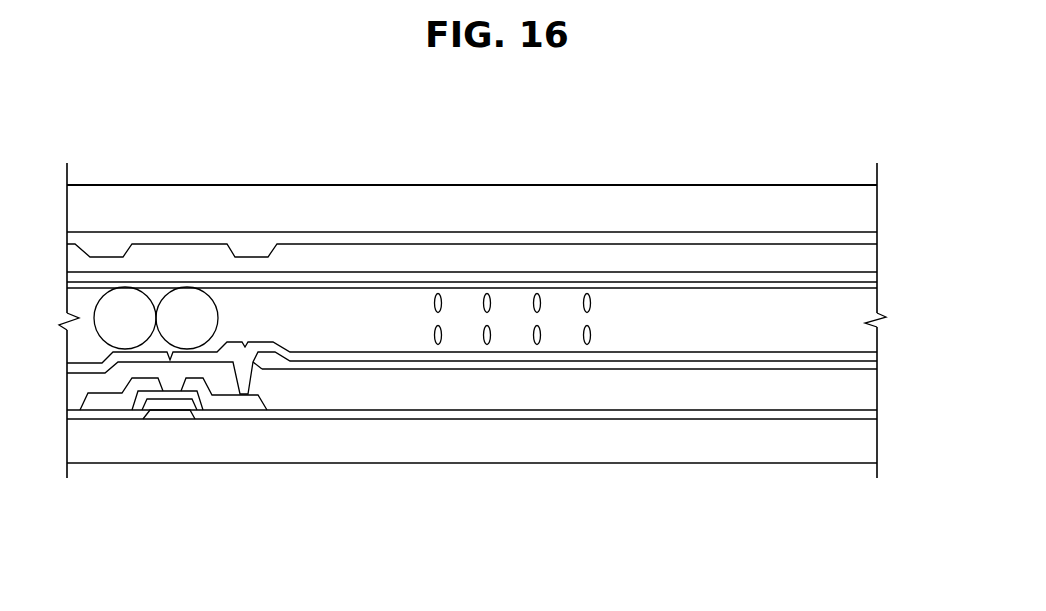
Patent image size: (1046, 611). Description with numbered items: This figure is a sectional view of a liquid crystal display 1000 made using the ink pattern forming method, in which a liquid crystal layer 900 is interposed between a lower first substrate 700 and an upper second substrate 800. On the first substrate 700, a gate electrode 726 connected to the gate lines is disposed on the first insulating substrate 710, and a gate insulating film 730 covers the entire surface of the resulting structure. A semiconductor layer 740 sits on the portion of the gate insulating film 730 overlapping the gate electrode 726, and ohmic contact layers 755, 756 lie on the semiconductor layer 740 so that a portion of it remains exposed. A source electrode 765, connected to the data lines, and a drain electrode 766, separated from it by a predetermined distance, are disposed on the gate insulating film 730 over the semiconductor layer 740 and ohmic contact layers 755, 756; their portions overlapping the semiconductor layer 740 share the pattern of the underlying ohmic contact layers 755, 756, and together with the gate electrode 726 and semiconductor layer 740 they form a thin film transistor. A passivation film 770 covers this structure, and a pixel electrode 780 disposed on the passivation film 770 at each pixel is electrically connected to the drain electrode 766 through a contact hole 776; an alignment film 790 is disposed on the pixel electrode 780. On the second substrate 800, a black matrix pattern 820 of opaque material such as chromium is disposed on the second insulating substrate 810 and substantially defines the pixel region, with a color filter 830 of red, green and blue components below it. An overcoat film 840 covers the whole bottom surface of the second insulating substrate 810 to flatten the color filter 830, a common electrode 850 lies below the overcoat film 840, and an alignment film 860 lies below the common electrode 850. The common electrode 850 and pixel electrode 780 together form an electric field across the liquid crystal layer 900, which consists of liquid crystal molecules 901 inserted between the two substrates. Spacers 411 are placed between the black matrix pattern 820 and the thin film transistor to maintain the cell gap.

The liquid crystal display 1000 is at (728, 149).
The second substrate 800 is at (893, 187).
The second insulating substrate 810 is at (165, 200).
The black matrix pattern 820 is at (220, 240).
The color filter 830 is at (98, 243).
The overcoat film 840 is at (455, 255).
The common electrode 850 is at (548, 275).
The alignment film 860 is at (608, 284).
The liquid crystal layer 900 is at (893, 294).
The liquid crystal molecules 901 is at (591, 300).
The spacers 411 is at (218, 317).
The first substrate 700 is at (893, 355).
The first insulating substrate 710 is at (446, 455).
The gate insulating film 730 is at (511, 414).
The semiconductor layer 740 is at (178, 410).
The gate electrode 726 is at (170, 418).
The ohmic contact layer 755 is at (155, 414).
The ohmic contact layer 756 is at (187, 405).
The source electrode 765 is at (143, 410).
The drain electrode 766 is at (207, 383).
The passivation film 770 is at (767, 395).
The contact hole 776 is at (246, 358).
The pixel electrode 780 is at (364, 368).
The alignment film 790 is at (643, 357).